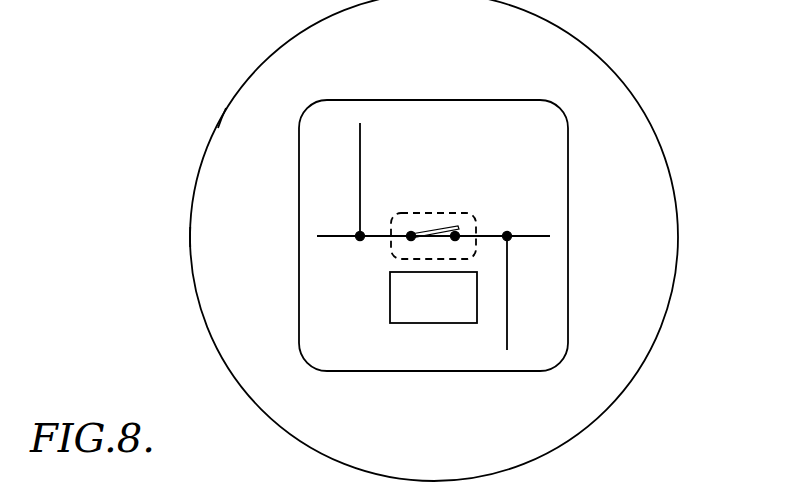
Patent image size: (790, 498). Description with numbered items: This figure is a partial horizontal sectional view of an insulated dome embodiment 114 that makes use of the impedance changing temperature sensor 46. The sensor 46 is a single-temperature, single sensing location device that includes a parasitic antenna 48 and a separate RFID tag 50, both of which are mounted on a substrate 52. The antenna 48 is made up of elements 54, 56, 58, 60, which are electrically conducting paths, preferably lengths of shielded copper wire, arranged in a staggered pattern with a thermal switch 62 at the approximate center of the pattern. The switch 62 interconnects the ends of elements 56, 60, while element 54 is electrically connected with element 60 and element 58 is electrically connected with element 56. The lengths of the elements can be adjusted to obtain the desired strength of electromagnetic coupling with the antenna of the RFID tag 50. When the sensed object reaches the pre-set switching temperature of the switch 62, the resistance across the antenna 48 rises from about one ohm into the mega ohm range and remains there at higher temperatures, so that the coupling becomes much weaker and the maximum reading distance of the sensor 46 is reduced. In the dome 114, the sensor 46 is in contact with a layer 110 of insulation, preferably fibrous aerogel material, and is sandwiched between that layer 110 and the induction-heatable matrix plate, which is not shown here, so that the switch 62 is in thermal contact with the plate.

The impedance changing temperature sensor 46 is at (583, 104).
The dome embodiment 114 is at (190, 117).
The layer of insulation 110 is at (218, 255).
The substrate 52 is at (560, 323).
The parasitic antenna 48 is at (427, 177).
The antenna element 54 is at (362, 143).
The antenna element 60 is at (333, 238).
The thermal switch 62 is at (475, 214).
The antenna element 56 is at (539, 234).
The antenna element 58 is at (508, 290).
The RFID tag 50 is at (423, 323).